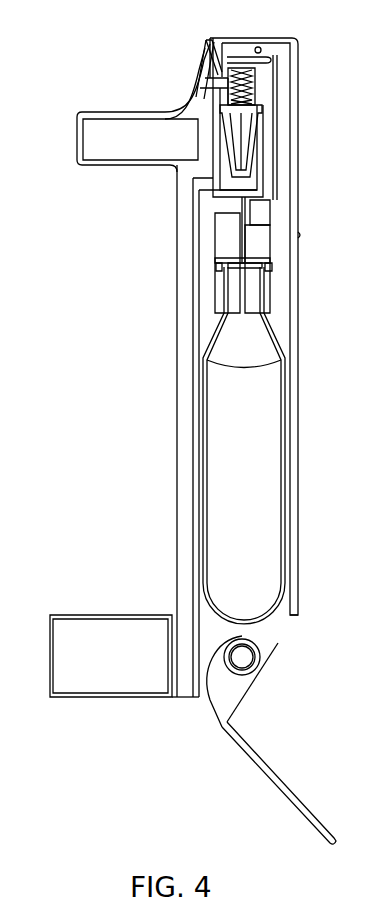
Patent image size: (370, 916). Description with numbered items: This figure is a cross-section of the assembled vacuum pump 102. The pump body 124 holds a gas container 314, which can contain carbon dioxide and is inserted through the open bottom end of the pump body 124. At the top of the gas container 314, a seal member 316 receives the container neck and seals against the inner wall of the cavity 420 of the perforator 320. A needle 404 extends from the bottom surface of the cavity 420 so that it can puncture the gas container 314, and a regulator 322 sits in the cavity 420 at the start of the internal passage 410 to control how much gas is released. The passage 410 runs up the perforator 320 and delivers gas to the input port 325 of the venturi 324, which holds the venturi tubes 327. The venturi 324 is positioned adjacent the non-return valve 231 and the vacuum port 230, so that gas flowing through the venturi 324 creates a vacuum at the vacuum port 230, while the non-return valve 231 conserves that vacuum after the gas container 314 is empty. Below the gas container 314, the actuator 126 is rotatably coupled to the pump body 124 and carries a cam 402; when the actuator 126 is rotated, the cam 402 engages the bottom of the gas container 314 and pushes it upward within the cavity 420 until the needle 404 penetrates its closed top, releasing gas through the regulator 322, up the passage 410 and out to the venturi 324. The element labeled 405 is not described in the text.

The vacuum pump 102 is at (93, 44).
The pump body 124 is at (177, 436).
The actuator 126 is at (275, 790).
The vacuum port 230 is at (200, 80).
The non-return valve 231 is at (201, 58).
The gas container 314 is at (285, 420).
The seal member 316 is at (224, 290).
The perforator 320 is at (203, 207).
The regulator 322 is at (268, 213).
The venturi 324 is at (208, 46).
The input port 325 is at (259, 52).
The venturi tubes 327 is at (258, 135).
The cam 402 is at (245, 688).
The needle 404 is at (220, 230).
The spring 405 is at (262, 72).
The internal passage 410 is at (270, 180).
The cavity 420 is at (260, 240).